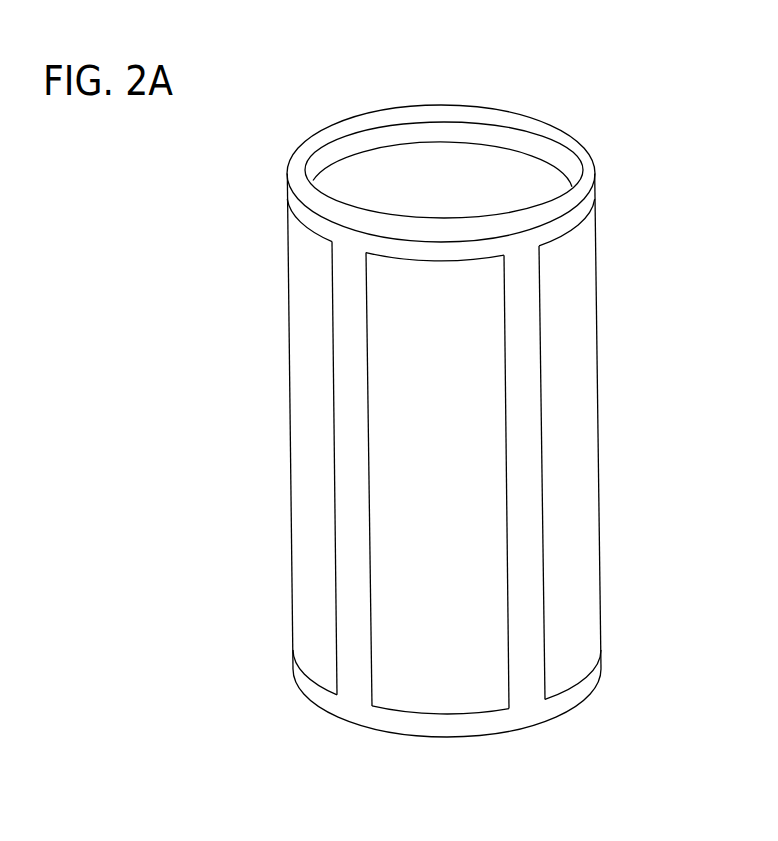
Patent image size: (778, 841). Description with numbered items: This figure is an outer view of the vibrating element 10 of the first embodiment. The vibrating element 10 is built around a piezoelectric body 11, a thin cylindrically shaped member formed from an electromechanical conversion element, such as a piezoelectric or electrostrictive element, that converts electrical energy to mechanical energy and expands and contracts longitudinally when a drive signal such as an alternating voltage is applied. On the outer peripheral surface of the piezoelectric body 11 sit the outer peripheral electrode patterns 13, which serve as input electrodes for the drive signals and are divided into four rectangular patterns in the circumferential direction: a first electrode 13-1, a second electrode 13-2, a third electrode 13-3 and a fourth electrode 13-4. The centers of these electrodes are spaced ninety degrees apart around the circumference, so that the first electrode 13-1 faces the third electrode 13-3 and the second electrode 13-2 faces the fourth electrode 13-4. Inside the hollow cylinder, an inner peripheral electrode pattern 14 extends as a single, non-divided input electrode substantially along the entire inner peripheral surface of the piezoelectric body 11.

The vibrating element 10 is at (683, 56).
The piezoelectric body 11 is at (332, 136).
The outer peripheral electrode patterns 13 is at (433, 436).
The first electrode 13-1 is at (438, 684).
The second electrode 13-2 is at (570, 658).
The third electrode 13-3 is at (443, 182).
The fourth electrode 13-4 is at (313, 658).
The inner peripheral electrode pattern 14 is at (530, 178).